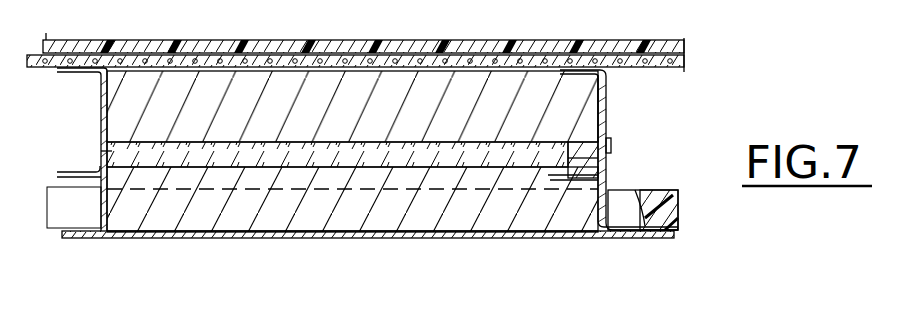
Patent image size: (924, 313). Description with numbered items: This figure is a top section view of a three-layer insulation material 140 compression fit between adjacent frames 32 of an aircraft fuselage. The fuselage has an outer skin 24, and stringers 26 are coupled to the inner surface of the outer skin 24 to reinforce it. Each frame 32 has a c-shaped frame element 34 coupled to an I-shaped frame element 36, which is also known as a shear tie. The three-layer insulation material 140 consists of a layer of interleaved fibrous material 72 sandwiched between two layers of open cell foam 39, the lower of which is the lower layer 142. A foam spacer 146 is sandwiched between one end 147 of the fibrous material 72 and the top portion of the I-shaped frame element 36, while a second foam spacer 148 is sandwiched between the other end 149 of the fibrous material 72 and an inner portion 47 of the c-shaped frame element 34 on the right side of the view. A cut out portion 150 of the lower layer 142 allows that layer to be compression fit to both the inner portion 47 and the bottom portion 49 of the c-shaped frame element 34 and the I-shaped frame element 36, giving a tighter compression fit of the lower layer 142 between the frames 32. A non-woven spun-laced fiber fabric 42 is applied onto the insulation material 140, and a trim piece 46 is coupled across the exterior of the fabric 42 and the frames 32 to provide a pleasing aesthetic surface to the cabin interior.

The three-layer insulation material 140 is at (700, 106).
The trim piece 46 is at (78, 42).
The non-woven spun-laced fiber fabric 42 is at (190, 56).
The c-shaped frame element 34 is at (101, 98).
The frame 32 is at (48, 116).
The foam spacer 146 is at (106, 152).
The end of the fibrous material 147 is at (196, 140).
The open cell foam 39 is at (330, 117).
The interleaved fibrous material 72 is at (555, 142).
The second foam spacer 148 is at (599, 141).
The other end of the fibrous material 149 is at (568, 158).
The I-shaped frame element 36 is at (102, 203).
The stringer 26 is at (350, 193).
The outer skin 24 is at (100, 236).
The inner portion of the c-shaped frame element 47 is at (557, 175).
The bottom portion of the c-shaped frame element 49 is at (563, 181).
The lower layer 142 is at (542, 218).
The cut out portion 150 is at (580, 182).